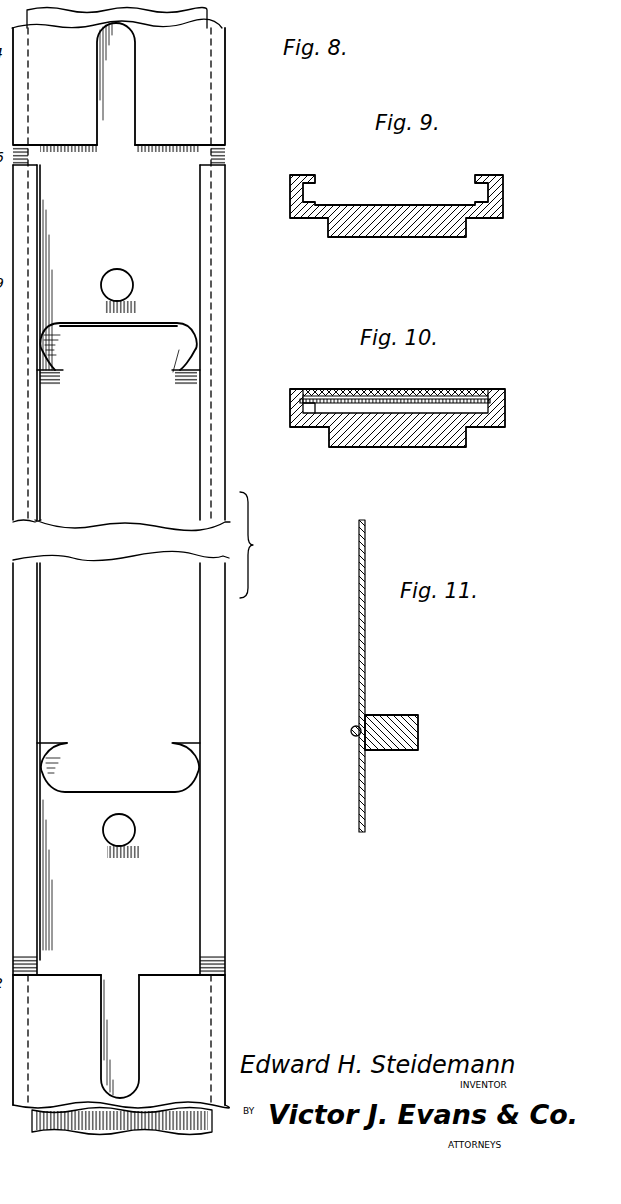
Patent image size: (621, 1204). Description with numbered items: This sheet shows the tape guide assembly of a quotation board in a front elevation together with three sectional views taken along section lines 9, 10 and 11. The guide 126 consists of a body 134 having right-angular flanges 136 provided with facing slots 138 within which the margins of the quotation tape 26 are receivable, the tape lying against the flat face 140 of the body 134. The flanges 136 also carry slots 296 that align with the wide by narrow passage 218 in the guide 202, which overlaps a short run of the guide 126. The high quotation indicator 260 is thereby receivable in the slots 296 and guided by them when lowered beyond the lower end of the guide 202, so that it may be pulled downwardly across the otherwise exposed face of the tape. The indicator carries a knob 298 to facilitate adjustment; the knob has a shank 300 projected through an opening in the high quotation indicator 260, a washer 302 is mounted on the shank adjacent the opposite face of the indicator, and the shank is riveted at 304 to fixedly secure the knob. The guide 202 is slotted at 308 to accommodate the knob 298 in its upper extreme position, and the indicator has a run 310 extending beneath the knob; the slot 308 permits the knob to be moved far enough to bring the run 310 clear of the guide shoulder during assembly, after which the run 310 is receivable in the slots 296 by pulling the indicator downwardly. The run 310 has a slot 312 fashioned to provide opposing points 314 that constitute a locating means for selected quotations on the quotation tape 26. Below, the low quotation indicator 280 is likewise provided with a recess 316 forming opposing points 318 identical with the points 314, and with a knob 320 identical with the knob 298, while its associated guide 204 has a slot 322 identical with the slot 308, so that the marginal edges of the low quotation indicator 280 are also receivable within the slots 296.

In FIG. 8, the quotation tape 26 is at (205, 18).
In FIG. 8, the guide 202 is at (205, 78).
In FIG. 10, the guide 202 is at (478, 389).
In FIG. 8, the slot 308 is at (136, 125).
In FIG. 10, the slot 308 is at (415, 400).
In FIG. 8, the section line 10— 10 is at (0, 100).
In FIG. 8, the high quotation indicator 260 is at (185, 298).
In FIG. 11, the high quotation indicator 260 is at (366, 665).
In FIG. 8, the knob 298 is at (124, 278).
In FIG. 11, the knob 298 is at (418, 728).
In FIG. 8, the section line 11— 11 is at (128, 240).
In FIG. 8, the slot 312 is at (178, 325).
In FIG. 11, the slot 312 is at (366, 812).
In FIG. 8, the run 310 is at (192, 358).
In FIG. 8, the opposing points 314 is at (176, 372).
In FIG. 8, the section line 9— 9 is at (0, 458).
In FIG. 8, the recess 316 is at (103, 790).
In FIG. 8, the opposing points 318 is at (170, 728).
In FIG. 8, the knob 320 is at (122, 825).
In FIG. 8, the low quotation indicator 280 is at (190, 903).
In FIG. 8, the guide 204 is at (188, 1018).
In FIG. 8, the slot 322 is at (101, 1005).
In FIG. 9, the body 134 is at (420, 206).
In FIG. 10, the body 134 is at (382, 428).
In FIG. 9, the right-angular flanges 136 is at (520, 198).
In FIG. 9, the slots 296 is at (466, 157).
In FIG. 9, the facing slots 138 is at (482, 200).
In FIG. 10, the facing slots 138 is at (312, 410).
In FIG. 9, the face 140 is at (385, 205).
In FIG. 9, the guide 126 is at (420, 237).
In FIG. 10, the guide 126 is at (452, 447).
In FIG. 10, the passage 218 is at (440, 393).
In FIG. 11, the rivet 304 is at (351, 731).
In FIG. 11, the washer 302 is at (360, 718).
In FIG. 11, the shank 300 is at (356, 737).